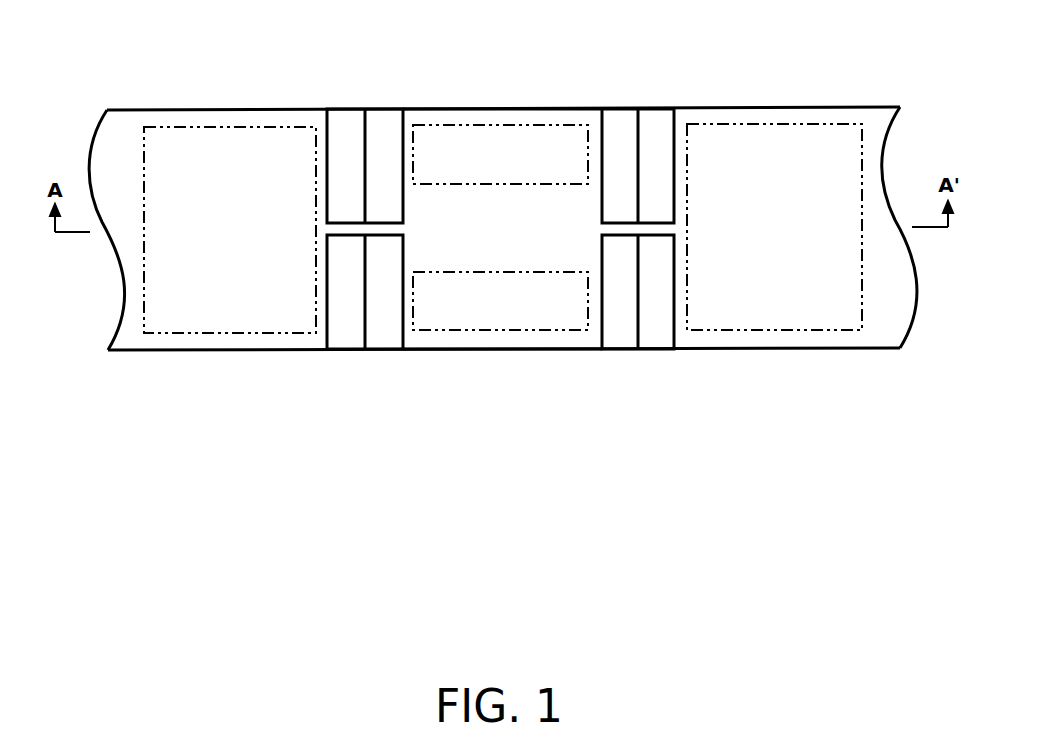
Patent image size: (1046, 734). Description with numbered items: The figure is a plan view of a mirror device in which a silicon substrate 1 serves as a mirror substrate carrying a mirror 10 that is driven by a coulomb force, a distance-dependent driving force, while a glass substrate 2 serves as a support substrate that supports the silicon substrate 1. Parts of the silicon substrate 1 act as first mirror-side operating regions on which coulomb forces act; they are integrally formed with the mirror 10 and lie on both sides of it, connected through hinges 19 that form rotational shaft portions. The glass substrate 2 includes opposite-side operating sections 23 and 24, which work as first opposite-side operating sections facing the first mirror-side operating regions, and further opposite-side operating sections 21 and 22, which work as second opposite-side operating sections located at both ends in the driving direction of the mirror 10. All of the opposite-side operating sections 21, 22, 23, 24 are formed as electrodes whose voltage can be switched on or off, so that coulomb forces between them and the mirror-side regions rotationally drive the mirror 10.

The silicon substrate 1 is at (874, 112).
The glass substrate 2 is at (657, 113).
The mirror 10 is at (527, 113).
The hinges 19 is at (374, 228).
The opposite-side operating section 21 is at (488, 330).
The opposite-side operating section 22 is at (488, 125).
The opposite-side operating section 23 is at (240, 127).
The opposite-side operating section 24 is at (778, 124).